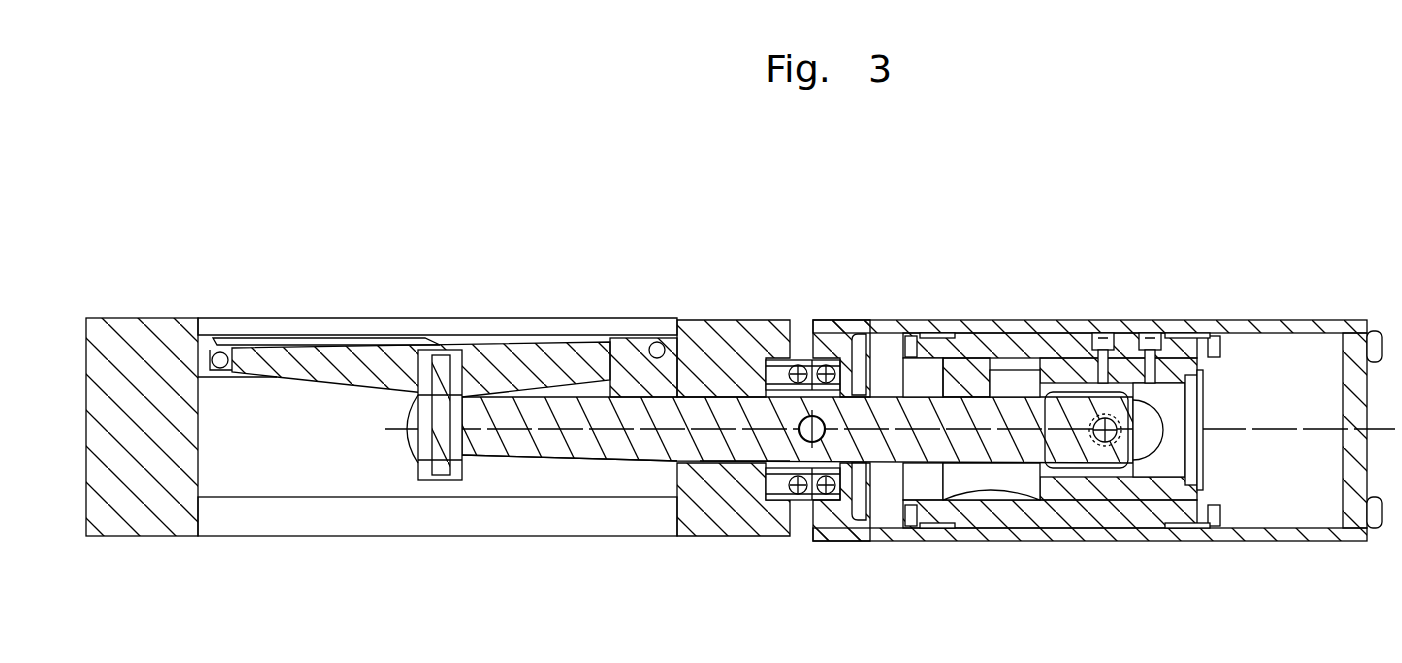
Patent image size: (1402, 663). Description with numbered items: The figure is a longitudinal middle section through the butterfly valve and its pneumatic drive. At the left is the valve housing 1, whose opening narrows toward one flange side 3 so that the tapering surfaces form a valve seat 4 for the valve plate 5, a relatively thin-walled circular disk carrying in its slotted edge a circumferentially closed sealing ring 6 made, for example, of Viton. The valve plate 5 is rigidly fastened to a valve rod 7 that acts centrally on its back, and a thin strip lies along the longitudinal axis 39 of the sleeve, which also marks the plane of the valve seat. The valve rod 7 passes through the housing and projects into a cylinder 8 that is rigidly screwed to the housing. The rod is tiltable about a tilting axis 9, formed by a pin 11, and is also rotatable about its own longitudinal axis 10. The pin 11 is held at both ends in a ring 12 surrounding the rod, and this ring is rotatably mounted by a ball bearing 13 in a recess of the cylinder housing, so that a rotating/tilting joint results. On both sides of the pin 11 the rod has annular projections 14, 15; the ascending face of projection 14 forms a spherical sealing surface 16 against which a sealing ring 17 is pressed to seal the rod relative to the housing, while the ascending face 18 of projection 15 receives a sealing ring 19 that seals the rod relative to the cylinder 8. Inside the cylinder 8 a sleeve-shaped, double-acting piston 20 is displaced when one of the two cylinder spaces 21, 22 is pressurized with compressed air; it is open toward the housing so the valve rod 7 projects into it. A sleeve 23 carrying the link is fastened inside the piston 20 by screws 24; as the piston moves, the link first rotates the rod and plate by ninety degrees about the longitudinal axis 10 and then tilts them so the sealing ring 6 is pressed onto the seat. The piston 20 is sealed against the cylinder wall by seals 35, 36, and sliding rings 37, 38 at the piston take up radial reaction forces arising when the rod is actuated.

The valve housing 1 is at (175, 530).
The flange side 3 is at (113, 318).
The valve seat 4 is at (678, 322).
The valve plate 5 is at (311, 358).
The sealing ring 6 is at (229, 350).
The valve rod 7 is at (570, 445).
The cylinder 8 is at (1033, 330).
The tilting axis 9 is at (800, 436).
The longitudinal axis 10 is at (518, 447).
The pin 11 is at (778, 452).
The ring 12 is at (797, 487).
The ball bearing 13 is at (820, 508).
The projection 14 is at (785, 470).
The projection 15 is at (884, 510).
The sealing surface 16 is at (768, 390).
The sealing ring 17 is at (778, 362).
The ascending face 18 is at (865, 403).
The sealing ring 19 is at (845, 355).
The piston 20 is at (1213, 417).
The cylinder space 21 is at (872, 522).
The cylinder space 22 is at (1274, 498).
The sleeve 23 is at (1122, 490).
The screws 24 is at (1099, 335).
The seal 35 is at (915, 522).
The seal 36 is at (1213, 518).
The sliding ring 37 is at (942, 525).
The sliding ring 38 is at (1185, 524).
The longitudinal axis of the sleeve / plane of the valve seat 39 is at (393, 340).